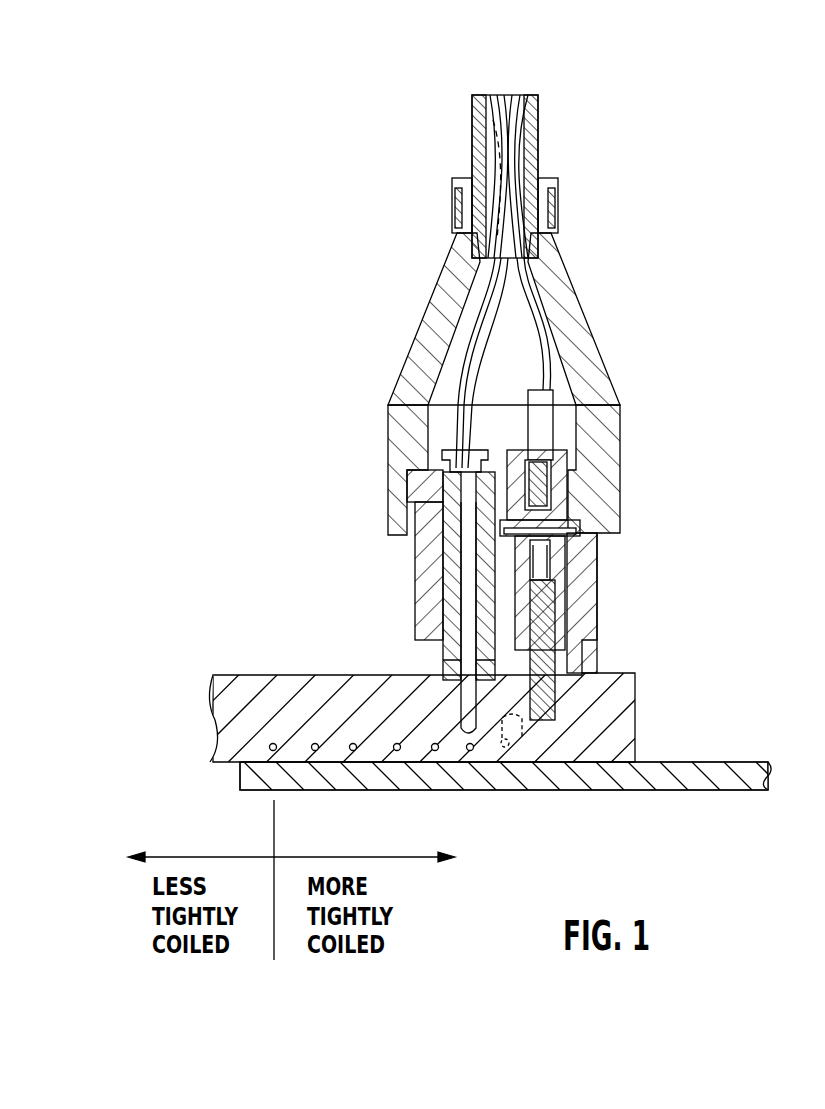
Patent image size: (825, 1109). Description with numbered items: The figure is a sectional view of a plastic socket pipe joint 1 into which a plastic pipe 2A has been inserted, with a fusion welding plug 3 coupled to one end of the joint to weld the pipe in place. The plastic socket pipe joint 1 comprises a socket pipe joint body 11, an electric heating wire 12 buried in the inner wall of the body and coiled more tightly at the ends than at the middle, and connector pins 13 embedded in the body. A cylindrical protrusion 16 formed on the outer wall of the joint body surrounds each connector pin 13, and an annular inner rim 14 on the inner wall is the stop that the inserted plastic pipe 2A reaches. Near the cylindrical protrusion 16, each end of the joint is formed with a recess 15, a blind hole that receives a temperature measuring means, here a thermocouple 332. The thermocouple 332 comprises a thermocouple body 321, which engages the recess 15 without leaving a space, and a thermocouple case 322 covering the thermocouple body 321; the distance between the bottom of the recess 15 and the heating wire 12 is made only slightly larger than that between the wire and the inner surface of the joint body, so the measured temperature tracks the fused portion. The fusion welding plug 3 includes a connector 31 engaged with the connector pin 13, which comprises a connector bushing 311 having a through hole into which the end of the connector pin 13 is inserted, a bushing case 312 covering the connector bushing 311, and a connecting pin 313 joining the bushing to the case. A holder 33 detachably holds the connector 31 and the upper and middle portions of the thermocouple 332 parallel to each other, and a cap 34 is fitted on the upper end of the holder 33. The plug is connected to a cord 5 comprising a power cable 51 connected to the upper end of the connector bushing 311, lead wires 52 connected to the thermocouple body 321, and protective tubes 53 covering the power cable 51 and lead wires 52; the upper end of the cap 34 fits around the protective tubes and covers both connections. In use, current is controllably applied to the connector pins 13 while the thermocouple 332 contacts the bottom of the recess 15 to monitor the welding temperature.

The plastic socket pipe joint 1 is at (425, 732).
The plastic pipe 2A is at (738, 762).
The fusion welding plug 3 is at (495, 384).
The cord 5 is at (509, 174).
The socket pipe joint body 11 is at (425, 732).
The electric heating wire 12 is at (350, 745).
The connector pin 13 is at (556, 690).
The annular inner rim 14 is at (475, 762).
The recess 15 is at (471, 751).
The cylindrical protrusion 16 is at (597, 627).
The connector 31 is at (633, 550).
The holder 33 is at (422, 555).
The cap 34 is at (580, 345).
The power cable 51 is at (518, 162).
The lead wires 52 is at (440, 333).
The protective tubes 53 is at (545, 102).
The connector bushing 311 is at (593, 557).
The bushing case 312 is at (708, 518).
The connecting pin 313 is at (600, 522).
The thermocouple body 321 is at (463, 735).
The thermocouple case 322 is at (443, 653).
The thermocouple 332 is at (432, 667).